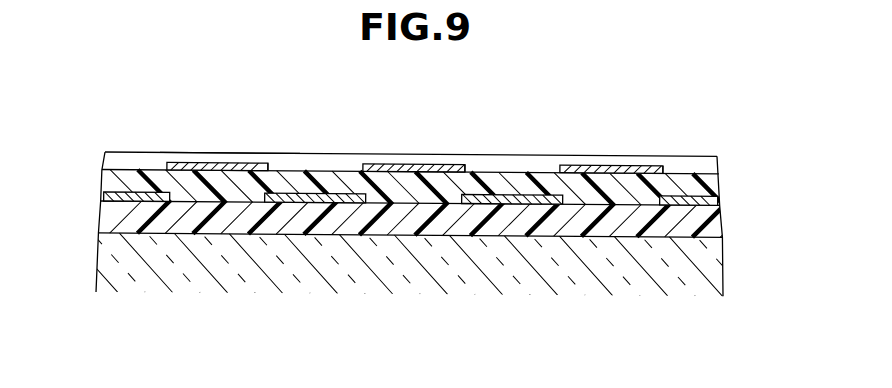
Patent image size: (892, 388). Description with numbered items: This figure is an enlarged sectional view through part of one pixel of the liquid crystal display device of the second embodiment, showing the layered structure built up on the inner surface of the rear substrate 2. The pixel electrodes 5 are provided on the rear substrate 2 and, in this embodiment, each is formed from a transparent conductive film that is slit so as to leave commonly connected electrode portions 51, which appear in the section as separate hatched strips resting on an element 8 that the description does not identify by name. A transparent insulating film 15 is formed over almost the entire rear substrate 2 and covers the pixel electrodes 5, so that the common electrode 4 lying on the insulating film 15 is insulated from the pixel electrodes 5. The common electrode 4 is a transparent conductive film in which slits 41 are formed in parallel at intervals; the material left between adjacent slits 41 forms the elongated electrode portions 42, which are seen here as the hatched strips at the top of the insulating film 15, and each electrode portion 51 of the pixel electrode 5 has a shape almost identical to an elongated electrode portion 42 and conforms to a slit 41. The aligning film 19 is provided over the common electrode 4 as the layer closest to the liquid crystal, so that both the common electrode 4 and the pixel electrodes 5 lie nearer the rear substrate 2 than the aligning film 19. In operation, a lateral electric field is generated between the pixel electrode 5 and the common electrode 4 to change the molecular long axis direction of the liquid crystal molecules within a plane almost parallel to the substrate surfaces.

The rear substrate 2 is at (660, 270).
The common electrode 4 is at (184, 149).
The slit 41 is at (284, 166).
The elongated electrode portion 42 is at (231, 165).
The pixel electrode 5 is at (347, 176).
The electrode portion 51 is at (347, 216).
The lower insulating layer 8 is at (160, 228).
The transparent insulating film 15 is at (700, 172).
The aligning film 19 is at (547, 154).